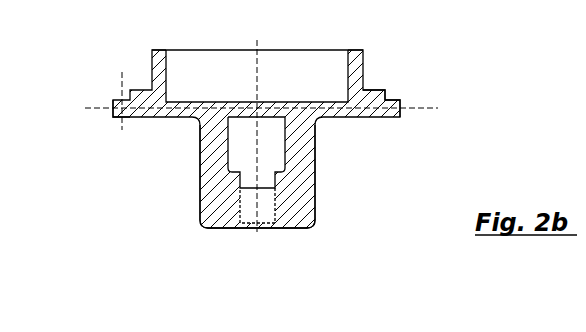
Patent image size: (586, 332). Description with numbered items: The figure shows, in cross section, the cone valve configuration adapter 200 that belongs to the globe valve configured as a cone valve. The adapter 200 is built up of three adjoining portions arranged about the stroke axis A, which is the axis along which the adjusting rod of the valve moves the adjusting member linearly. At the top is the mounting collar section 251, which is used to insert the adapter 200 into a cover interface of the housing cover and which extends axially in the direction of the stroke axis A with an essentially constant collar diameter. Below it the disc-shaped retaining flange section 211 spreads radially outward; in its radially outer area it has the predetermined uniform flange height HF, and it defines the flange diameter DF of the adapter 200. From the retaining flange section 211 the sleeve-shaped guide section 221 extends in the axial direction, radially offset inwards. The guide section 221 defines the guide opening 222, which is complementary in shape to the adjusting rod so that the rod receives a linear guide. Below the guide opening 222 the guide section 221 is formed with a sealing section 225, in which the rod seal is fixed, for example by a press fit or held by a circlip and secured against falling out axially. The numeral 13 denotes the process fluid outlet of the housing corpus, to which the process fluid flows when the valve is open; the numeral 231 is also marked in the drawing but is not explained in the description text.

The cone valve configuration adapter 200 is at (273, 150).
The cup wall 231 is at (186, 25).
The process fluid outlet 13 is at (326, 25).
The stroke axis A is at (258, 70).
The retaining flange section 211 is at (112, 102).
The mounting collar section 251 is at (387, 85).
The guide section 221 is at (182, 145).
The guide opening 222 is at (282, 183).
The sealing section 225 is at (286, 207).
The flange height HF is at (110, 127).
The flange diameter DF is at (430, 110).